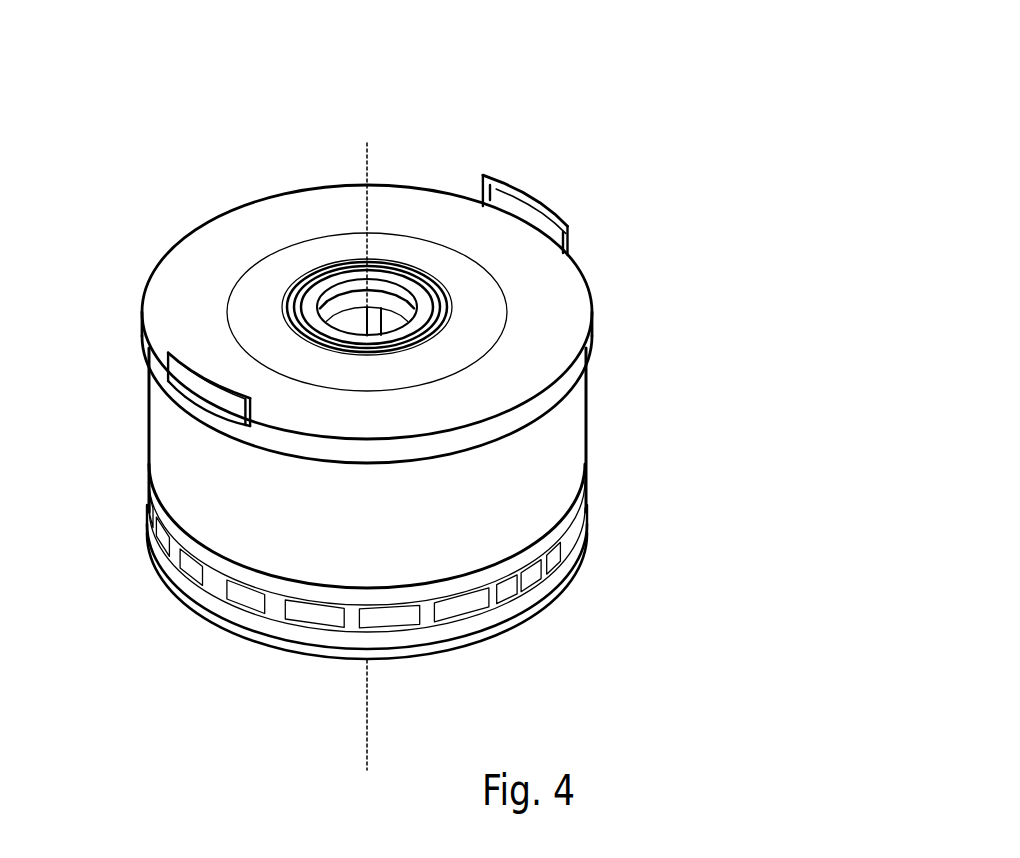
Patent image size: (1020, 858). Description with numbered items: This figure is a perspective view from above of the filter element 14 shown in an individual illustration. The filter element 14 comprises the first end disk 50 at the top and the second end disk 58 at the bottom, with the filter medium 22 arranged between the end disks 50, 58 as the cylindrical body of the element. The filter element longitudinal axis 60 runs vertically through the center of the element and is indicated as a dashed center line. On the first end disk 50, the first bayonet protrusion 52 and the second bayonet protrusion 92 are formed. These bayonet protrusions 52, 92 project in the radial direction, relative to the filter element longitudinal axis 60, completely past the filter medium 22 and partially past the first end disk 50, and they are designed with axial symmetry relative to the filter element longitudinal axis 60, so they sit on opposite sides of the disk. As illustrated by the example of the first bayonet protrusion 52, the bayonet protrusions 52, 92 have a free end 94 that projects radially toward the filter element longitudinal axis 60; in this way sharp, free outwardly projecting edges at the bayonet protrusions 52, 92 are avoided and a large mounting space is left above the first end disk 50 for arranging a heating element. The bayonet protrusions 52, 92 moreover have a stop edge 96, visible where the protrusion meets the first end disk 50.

The filter element 14 is at (552, 108).
The filter medium 22 is at (540, 465).
The first end disk 50 is at (560, 310).
The first bayonet protrusion 52 is at (550, 190).
The second end disk 58 is at (592, 523).
The filter element longitudinal axis 60 is at (363, 723).
The second bayonet protrusion 92 is at (201, 401).
The free end 94 is at (500, 182).
The stop edge 96 is at (480, 202).